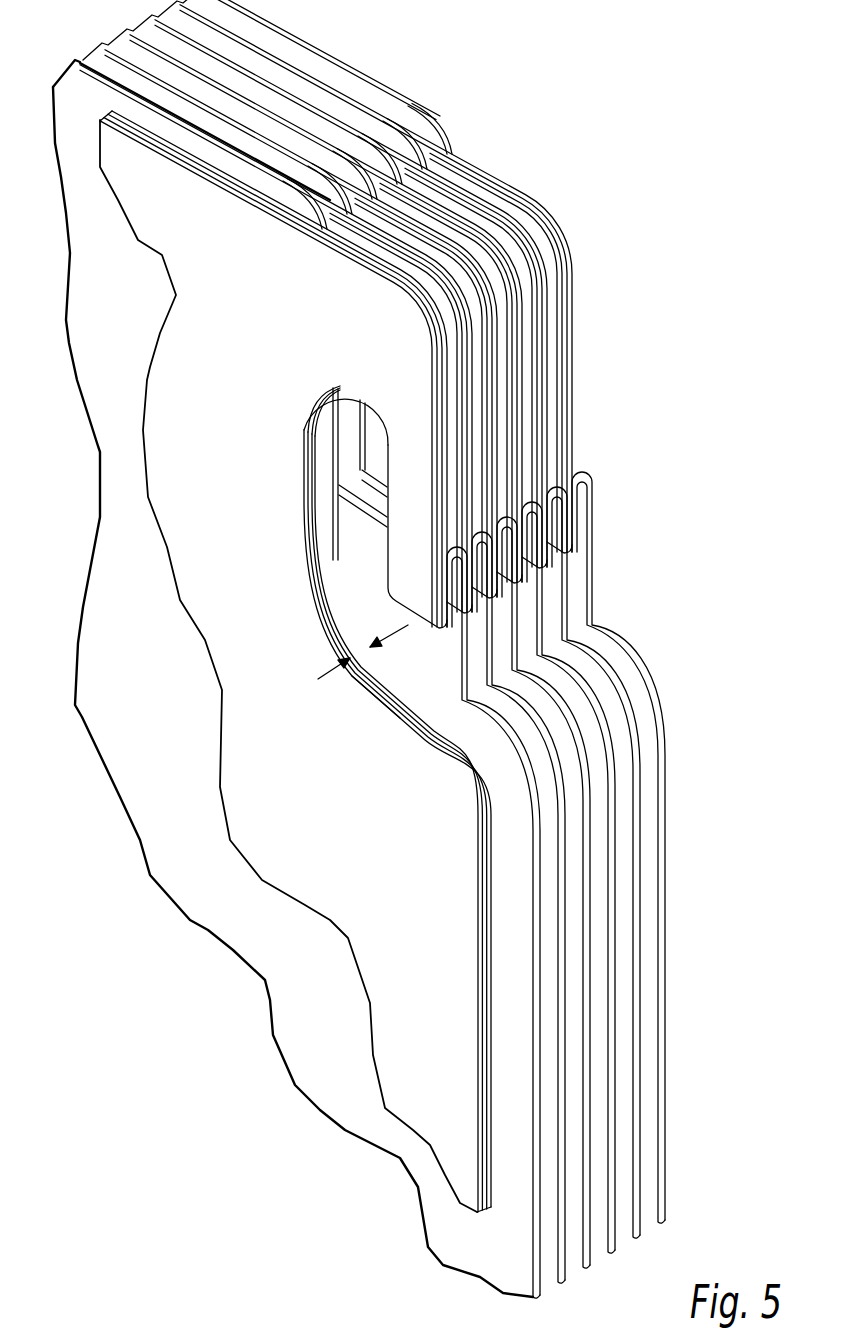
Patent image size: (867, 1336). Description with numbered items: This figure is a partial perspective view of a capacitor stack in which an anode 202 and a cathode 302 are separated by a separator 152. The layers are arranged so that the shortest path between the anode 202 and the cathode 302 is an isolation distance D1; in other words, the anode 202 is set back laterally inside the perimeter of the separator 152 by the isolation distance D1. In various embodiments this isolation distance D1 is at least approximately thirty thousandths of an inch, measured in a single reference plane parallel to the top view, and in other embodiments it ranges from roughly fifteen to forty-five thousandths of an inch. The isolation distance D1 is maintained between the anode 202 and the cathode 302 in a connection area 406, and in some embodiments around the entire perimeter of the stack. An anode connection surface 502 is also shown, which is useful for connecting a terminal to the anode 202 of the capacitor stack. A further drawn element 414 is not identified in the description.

The anode 202 is at (192, 288).
The separator 152 is at (333, 506).
The cathode 302 is at (443, 694).
The bend 414 is at (397, 681).
The anode connection surface 502 is at (570, 376).
The connection area 406 is at (393, 641).
The isolation distance D1 is at (332, 678).